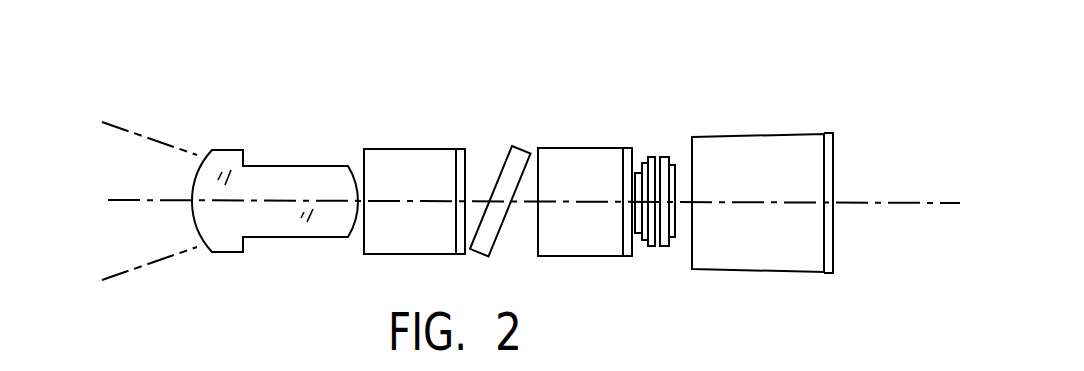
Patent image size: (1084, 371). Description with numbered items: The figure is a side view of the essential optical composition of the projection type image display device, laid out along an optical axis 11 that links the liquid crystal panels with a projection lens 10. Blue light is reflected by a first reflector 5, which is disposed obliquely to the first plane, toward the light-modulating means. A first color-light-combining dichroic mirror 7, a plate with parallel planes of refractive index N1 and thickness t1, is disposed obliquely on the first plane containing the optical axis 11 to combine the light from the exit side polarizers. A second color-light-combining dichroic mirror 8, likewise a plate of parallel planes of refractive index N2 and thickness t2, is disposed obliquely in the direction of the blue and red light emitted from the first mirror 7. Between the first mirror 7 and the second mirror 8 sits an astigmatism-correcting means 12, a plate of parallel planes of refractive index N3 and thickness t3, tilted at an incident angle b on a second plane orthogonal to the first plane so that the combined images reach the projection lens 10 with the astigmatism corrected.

The first reflector 5 is at (763, 134).
The first color-light-combining dichroic mirror 7 is at (598, 147).
The second color-light-combining dichroic mirror 8 is at (397, 148).
The projection lens 10 is at (301, 173).
The optical axis 11 is at (470, 200).
The astigmatism-correcting means 12 is at (518, 152).